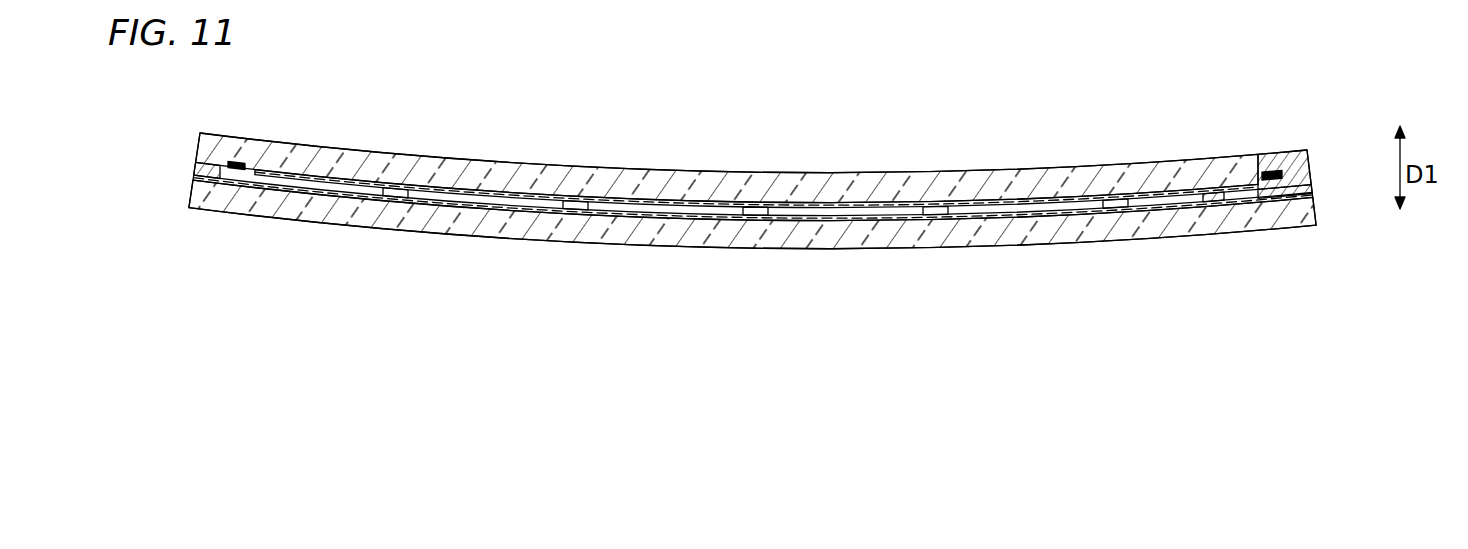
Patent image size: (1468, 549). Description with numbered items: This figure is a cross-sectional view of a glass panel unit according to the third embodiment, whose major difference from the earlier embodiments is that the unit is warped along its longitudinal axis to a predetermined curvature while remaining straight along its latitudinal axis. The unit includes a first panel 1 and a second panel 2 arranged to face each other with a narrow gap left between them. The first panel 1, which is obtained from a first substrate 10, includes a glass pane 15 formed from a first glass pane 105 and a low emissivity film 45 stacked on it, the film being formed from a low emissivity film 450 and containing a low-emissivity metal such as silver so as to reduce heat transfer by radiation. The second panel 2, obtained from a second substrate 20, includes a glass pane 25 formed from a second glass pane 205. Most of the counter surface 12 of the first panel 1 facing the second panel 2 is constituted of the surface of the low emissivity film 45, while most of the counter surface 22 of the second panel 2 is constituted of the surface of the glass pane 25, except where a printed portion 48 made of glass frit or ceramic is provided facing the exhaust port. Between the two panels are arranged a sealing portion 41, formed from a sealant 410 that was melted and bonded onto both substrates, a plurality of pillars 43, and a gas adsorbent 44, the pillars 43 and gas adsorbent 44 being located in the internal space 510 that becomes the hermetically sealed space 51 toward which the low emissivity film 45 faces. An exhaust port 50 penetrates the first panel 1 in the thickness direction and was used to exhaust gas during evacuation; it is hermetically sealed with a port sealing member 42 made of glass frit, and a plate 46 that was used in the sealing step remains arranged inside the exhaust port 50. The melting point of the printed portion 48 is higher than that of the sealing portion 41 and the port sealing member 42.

The first panel 1 is at (787, 198).
The first substrate 10 is at (333, 126).
The glass pane 15 is at (727, 161).
The first glass pane 105 is at (527, 176).
The second panel 2 is at (752, 235).
The second substrate 20 is at (752, 235).
The glass pane 25 is at (752, 235).
The second glass pane 205 is at (210, 279).
The low emissivity film 45 is at (756, 164).
The low emissivity film 450 is at (988, 200).
The hermetically sealed space 51 is at (753, 171).
The internal space 510 is at (1083, 207).
The counter surface 12 is at (716, 210).
The counter surface 22 is at (753, 238).
The printed portion 48 is at (682, 216).
The pillars 43 is at (384, 200).
The gas adsorbent 44 is at (238, 162).
The sealing portion 41 is at (1285, 200).
The sealant 410 is at (1212, 197).
The port sealing member 42 is at (1268, 197).
The exhaust port 50 is at (1282, 149).
The plate 46 is at (1270, 174).